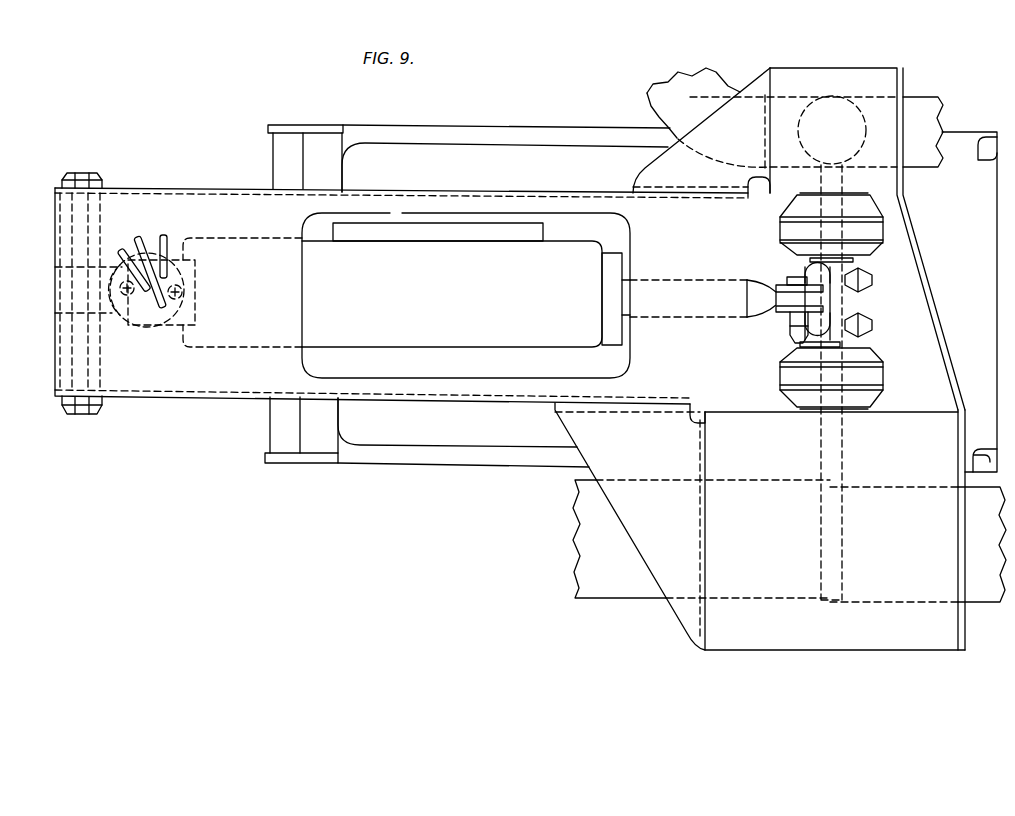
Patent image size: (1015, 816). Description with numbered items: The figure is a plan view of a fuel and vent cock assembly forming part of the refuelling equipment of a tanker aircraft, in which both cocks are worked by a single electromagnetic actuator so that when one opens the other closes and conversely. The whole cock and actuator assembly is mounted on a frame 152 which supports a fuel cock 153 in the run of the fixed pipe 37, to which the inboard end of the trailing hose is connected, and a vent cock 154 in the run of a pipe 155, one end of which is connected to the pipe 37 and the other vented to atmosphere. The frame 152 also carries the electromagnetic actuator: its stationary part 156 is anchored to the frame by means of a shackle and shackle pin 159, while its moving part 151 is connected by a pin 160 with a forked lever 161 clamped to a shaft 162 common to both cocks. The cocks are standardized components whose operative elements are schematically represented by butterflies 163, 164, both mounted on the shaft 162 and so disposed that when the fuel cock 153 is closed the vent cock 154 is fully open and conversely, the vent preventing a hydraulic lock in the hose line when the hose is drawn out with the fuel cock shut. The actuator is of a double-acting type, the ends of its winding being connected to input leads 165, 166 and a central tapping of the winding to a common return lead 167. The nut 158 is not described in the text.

The fixed pipe 37 is at (603, 577).
The moving part 151 is at (632, 290).
The frame 152 is at (196, 400).
The fuel cock 153 is at (740, 615).
The vent cock 154 is at (860, 86).
The pipe 155 is at (647, 95).
The stationary part 156 is at (377, 347).
The nut 158 is at (108, 332).
The shackle pin 159 is at (80, 172).
The pin 160 is at (795, 278).
The forked lever 161 is at (777, 286).
The shaft 162 is at (843, 260).
The butterfly 163 is at (843, 552).
The butterfly 164 is at (862, 116).
The input lead 165 is at (165, 235).
The input lead 166 is at (140, 236).
The common return lead 167 is at (120, 248).